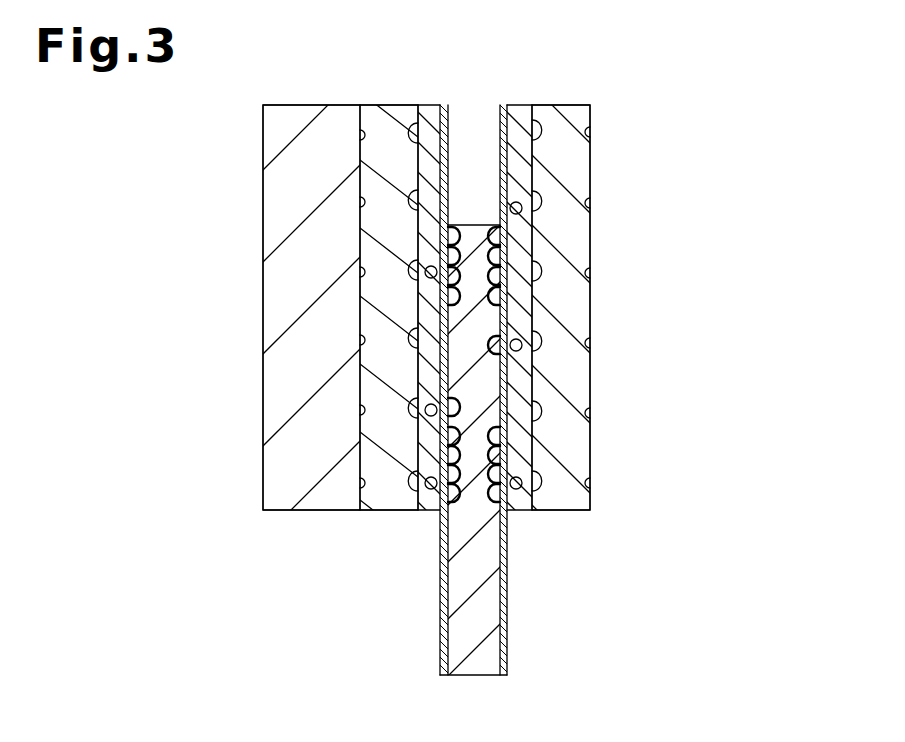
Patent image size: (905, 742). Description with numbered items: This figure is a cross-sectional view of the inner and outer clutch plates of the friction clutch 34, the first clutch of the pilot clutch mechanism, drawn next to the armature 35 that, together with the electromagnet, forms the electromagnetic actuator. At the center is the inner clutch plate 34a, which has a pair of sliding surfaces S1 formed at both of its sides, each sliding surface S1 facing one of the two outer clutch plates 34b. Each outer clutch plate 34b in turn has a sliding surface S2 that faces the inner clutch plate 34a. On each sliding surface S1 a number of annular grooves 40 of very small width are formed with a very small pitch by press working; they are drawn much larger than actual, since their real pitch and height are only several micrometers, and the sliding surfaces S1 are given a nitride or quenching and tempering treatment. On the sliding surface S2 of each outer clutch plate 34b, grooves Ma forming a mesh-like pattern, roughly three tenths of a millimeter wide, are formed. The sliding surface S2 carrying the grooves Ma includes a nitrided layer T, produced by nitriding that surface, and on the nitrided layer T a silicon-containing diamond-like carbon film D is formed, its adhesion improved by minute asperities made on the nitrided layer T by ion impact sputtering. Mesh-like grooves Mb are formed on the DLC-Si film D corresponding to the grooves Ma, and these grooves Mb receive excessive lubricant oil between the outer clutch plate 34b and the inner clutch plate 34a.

The friction clutch 34 is at (610, 115).
The armature 35 is at (281, 112).
The outer clutch plate 34b is at (375, 114).
The inner clutch plate 34a is at (452, 588).
The nitrided layer T is at (426, 105).
The diamond-like carbon film (DLC-Si film) D is at (438, 105).
The sliding surface S2 is at (500, 141).
The sliding surface S1 is at (441, 643).
The mesh-like grooves Mb is at (438, 207).
The grooves Ma is at (430, 408).
The annular grooves 40 is at (433, 512).